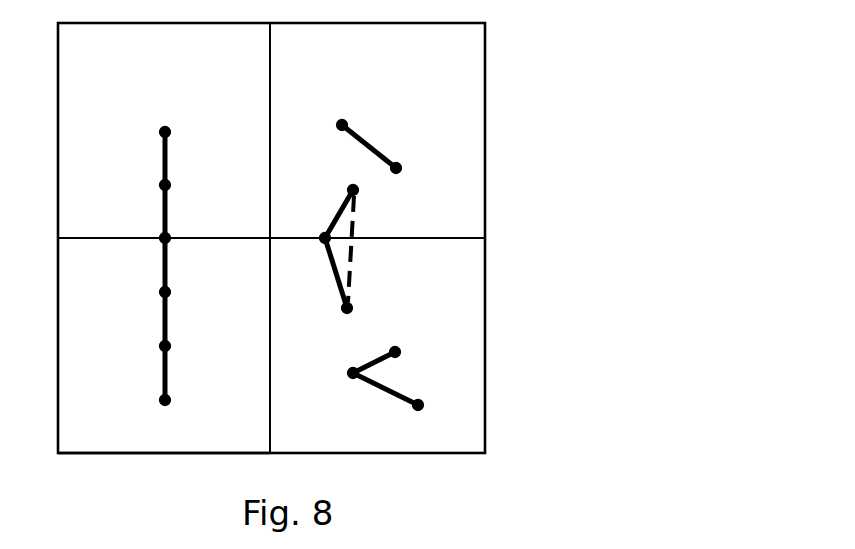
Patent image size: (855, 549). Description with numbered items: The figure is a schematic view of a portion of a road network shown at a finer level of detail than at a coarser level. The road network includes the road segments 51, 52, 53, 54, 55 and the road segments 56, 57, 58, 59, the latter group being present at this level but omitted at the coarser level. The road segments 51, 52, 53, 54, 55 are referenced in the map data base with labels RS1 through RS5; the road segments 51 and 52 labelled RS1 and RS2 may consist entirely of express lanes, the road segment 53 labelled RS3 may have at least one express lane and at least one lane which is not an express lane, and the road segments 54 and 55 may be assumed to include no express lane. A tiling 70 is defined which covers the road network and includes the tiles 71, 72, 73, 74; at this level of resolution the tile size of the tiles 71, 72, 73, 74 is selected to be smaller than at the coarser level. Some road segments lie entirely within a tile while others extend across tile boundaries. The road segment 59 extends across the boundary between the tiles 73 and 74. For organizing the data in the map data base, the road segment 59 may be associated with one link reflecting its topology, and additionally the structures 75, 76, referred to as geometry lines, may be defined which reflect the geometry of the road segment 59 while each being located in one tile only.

The road segment 51 is at (162, 148).
The road segment 52 is at (163, 210).
The road segment 53 is at (163, 263).
The road segment 54 is at (163, 319).
The road segment 55 is at (163, 373).
The road segment 56 is at (366, 140).
The road segment 57 is at (402, 395).
The road segment 58 is at (369, 360).
The road segment 59 is at (355, 255).
The tiling 70 is at (485, 431).
The tile 71 is at (77, 212).
The tile 72 is at (77, 427).
The tile 73 is at (468, 285).
The tile 74 is at (468, 50).
The geometry line 75 is at (341, 199).
The geometry line 76 is at (339, 287).